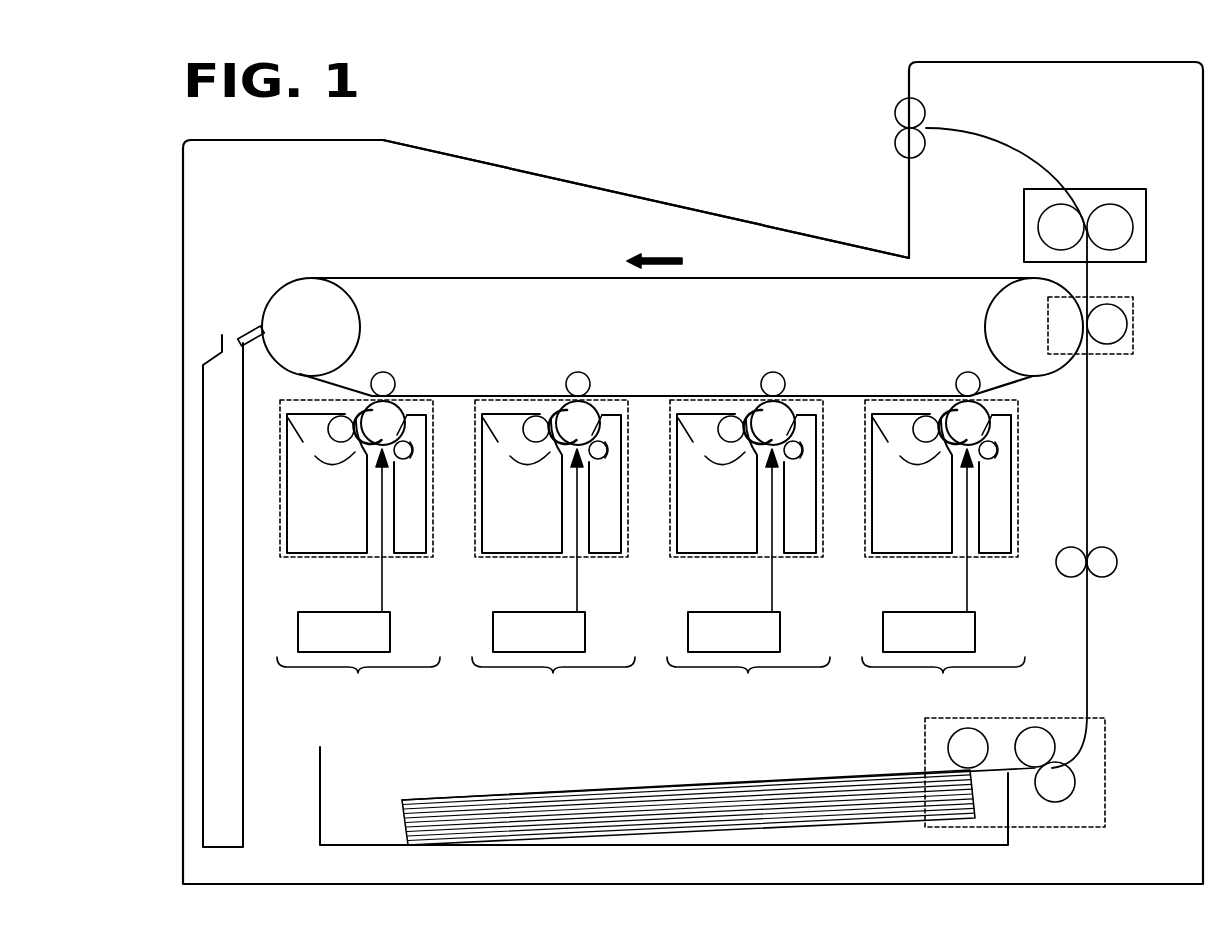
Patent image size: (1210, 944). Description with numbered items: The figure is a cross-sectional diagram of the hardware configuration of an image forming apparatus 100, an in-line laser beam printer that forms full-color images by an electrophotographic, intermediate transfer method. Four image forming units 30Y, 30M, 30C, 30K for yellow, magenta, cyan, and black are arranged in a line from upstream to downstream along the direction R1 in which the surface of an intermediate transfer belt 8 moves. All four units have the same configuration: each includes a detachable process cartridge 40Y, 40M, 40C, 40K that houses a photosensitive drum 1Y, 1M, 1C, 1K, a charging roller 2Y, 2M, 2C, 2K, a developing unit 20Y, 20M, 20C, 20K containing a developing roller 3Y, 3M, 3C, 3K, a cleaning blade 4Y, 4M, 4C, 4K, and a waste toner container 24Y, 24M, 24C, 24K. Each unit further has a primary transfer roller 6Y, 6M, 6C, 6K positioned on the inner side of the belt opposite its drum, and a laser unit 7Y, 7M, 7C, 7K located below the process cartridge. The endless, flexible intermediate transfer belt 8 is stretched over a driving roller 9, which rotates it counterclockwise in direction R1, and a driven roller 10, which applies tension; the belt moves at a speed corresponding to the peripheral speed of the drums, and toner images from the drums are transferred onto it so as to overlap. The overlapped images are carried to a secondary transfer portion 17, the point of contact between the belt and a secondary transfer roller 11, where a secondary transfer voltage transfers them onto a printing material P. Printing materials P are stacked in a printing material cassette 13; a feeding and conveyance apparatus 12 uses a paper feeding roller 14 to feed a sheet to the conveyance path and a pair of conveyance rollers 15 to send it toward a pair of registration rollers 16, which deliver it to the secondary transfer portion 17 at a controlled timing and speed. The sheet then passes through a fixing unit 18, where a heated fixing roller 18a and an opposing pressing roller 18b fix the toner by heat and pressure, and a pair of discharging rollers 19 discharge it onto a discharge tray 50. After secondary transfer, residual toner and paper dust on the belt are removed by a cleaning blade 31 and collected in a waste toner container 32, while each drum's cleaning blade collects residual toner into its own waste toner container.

The image forming apparatus 100 is at (1062, 62).
The discharge tray 50 is at (663, 203).
The intermediate transfer belt 8 is at (485, 277).
The direction of movement of the intermediate transfer belt R1 is at (654, 248).
The driven roller 10 is at (285, 292).
The driving roller 9 is at (990, 320).
The secondary transfer roller 11 is at (1127, 324).
The secondary transfer portion 17 is at (1118, 355).
The cleaning blade 31 is at (245, 333).
The waste toner container 32 is at (245, 792).
The pair of discharging rollers 19 is at (926, 108).
The fixing unit 18 is at (1120, 189).
The fixing roller 18a is at (1038, 227).
The pressing roller 18b is at (1133, 228).
The pair of registration rollers 16 is at (1117, 562).
The feeding and conveyance apparatus 12 is at (1105, 765).
The printing material cassette 13 is at (1010, 845).
The paper feeding roller 14 is at (948, 751).
The pair of conveyance rollers 15 is at (1035, 727).
The printing material P is at (738, 783).
The photosensitive drum 1Y is at (393, 410).
The charging roller 2Y is at (407, 458).
The developing roller 3Y is at (330, 420).
The cleaning blade 4Y is at (412, 449).
The primary transfer roller 6Y is at (381, 372).
The laser unit 7Y is at (390, 632).
The developing unit 20Y is at (296, 555).
The waste toner container 24Y is at (412, 555).
The image forming unit 30Y is at (388, 703).
The process cartridge 40Y is at (352, 557).
The photosensitive drum 1M is at (584, 399).
The charging roller 2M is at (625, 477).
The developing roller 3M is at (501, 406).
The cleaning blade 4M is at (627, 440).
The primary transfer roller 6M is at (577, 358).
The laser unit 7M is at (565, 632).
The developing unit 20M is at (507, 512).
The waste toner container 24M is at (606, 509).
The image forming unit 30M is at (553, 553).
The process cartridge 40M is at (546, 530).
The photosensitive drum 1C is at (779, 399).
The charging roller 2C is at (820, 477).
The developing roller 3C is at (696, 406).
The cleaning blade 4C is at (822, 440).
The primary transfer roller 6C is at (772, 358).
The laser unit 7C is at (760, 632).
The developing unit 20C is at (702, 512).
The waste toner container 24C is at (801, 509).
The image forming unit 30C is at (748, 553).
The process cartridge 40C is at (741, 530).
The photosensitive drum 1K is at (975, 399).
The charging roller 2K is at (1016, 477).
The developing roller 3K is at (891, 406).
The cleaning blade 4K is at (1017, 440).
The primary transfer roller 6K is at (968, 358).
The laser unit 7K is at (955, 632).
The developing unit 20K is at (897, 512).
The waste toner container 24K is at (996, 509).
The image forming unit 30K is at (943, 553).
The process cartridge 40K is at (936, 530).